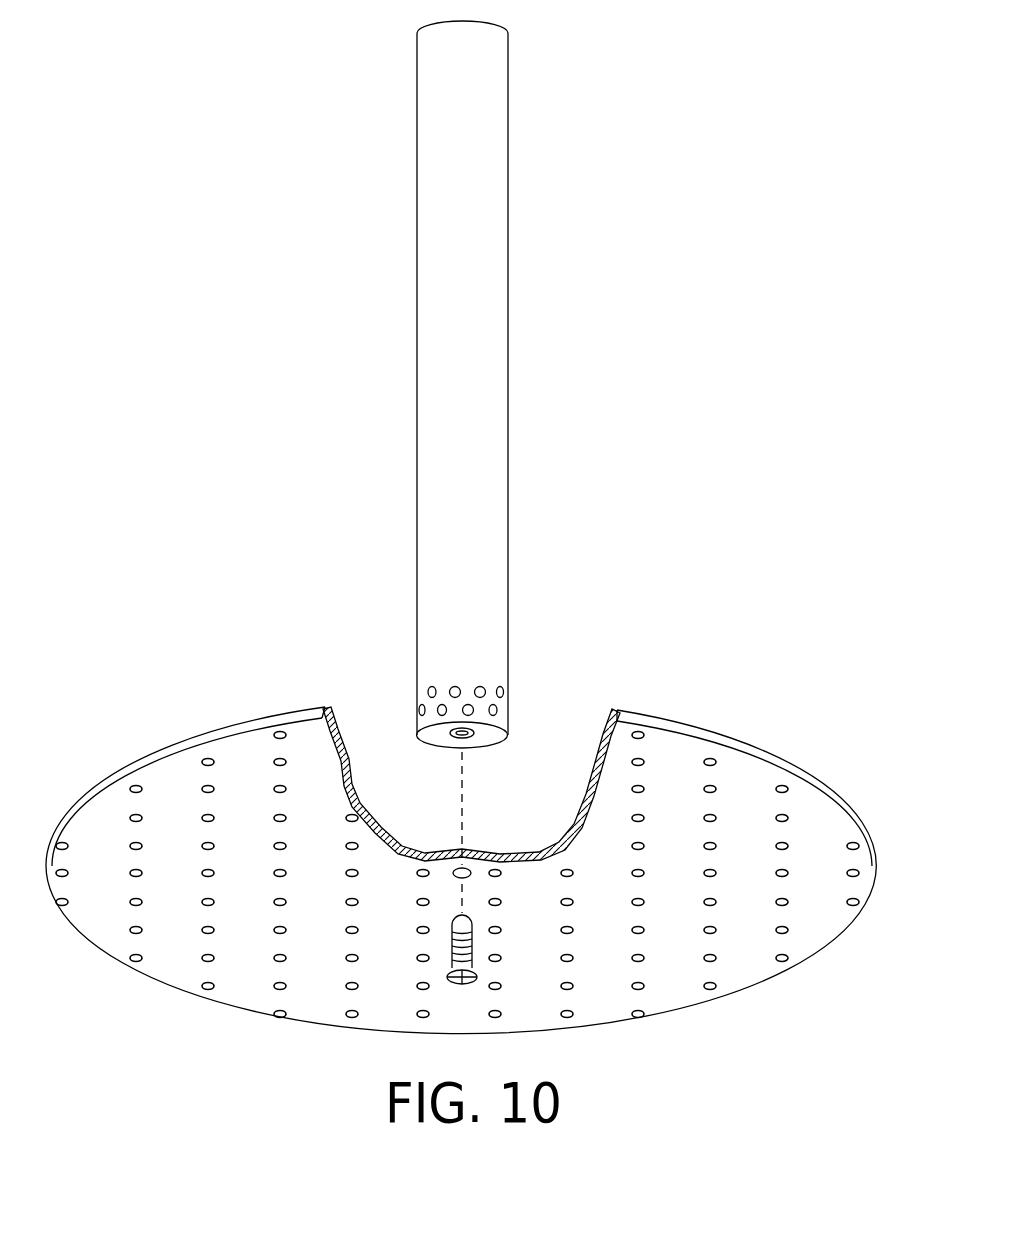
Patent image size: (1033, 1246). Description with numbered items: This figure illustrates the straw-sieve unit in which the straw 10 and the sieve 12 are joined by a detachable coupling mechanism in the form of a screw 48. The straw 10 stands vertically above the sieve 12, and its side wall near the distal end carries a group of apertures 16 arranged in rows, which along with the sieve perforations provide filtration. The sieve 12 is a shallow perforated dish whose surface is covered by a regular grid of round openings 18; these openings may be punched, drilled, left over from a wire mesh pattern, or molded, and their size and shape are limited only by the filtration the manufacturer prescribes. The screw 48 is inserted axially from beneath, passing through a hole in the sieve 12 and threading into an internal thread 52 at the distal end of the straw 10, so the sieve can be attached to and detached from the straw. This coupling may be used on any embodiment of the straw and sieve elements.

The straw 10 is at (497, 460).
The sieve 12 is at (684, 742).
The apertures 16 is at (501, 713).
The openings 18 is at (710, 992).
The screw 48 is at (478, 947).
The screw hole 52 is at (469, 741).